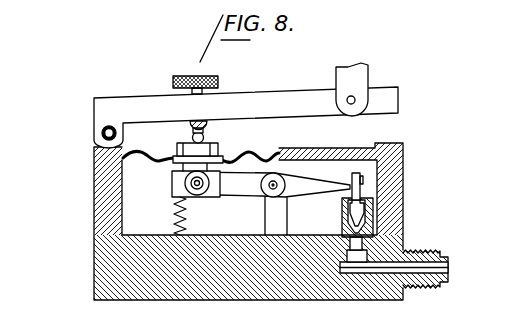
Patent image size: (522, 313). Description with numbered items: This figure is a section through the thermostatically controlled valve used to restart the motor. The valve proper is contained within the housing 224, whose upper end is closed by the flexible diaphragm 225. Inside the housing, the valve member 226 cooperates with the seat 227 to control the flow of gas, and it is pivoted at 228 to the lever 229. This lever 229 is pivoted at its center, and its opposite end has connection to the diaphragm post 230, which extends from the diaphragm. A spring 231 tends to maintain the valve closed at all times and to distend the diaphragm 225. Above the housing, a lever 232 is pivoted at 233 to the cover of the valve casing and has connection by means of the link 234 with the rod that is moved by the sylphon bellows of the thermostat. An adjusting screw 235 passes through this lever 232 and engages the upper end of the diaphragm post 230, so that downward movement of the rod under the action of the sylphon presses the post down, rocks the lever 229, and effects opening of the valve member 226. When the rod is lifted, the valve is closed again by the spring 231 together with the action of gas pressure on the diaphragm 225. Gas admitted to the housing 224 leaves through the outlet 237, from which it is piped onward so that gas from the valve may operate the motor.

The housing 224 is at (97, 185).
The flexible diaphragm 225 is at (258, 152).
The valve member 226 is at (358, 207).
The seat 227 is at (358, 230).
The pivot 228 is at (363, 180).
The lever 229 is at (303, 190).
The diaphragm post 230 is at (205, 185).
The spring 231 is at (173, 207).
The lever 232 is at (147, 90).
The pivot 233 is at (102, 134).
The link 234 is at (358, 82).
The adjusting screw 235 is at (219, 80).
The outlet 237 is at (448, 265).